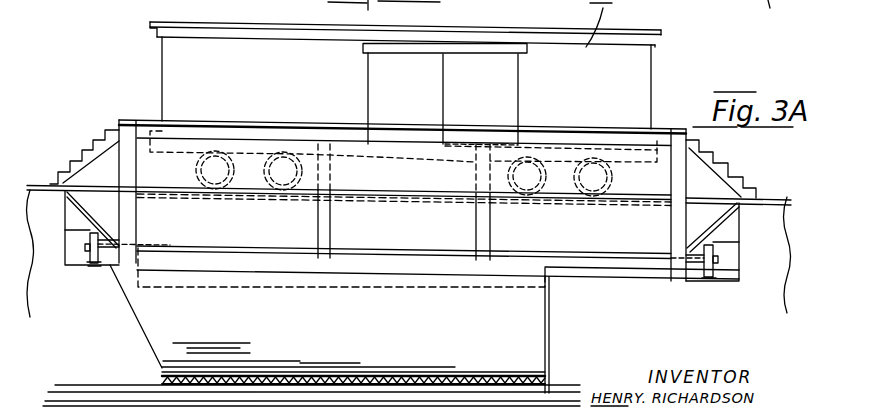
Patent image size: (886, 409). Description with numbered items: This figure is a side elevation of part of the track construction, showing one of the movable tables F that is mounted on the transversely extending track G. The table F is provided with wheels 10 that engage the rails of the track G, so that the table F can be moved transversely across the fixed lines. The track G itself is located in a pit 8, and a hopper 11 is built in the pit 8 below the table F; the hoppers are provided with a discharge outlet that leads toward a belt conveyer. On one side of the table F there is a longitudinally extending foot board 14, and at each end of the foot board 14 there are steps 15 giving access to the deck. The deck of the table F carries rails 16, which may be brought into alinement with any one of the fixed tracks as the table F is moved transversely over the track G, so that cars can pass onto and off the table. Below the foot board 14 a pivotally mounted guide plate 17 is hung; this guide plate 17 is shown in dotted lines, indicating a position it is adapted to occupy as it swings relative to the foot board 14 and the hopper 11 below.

The pit 8 is at (90, 264).
The wheels 10 is at (88, 236).
The hoppers 11 is at (167, 337).
The foot board 14 is at (577, 119).
The steps 15 is at (97, 127).
The rails 16 is at (432, 201).
The guide plate 17 is at (138, 250).
The movable tables F is at (661, 133).
The track G is at (97, 267).